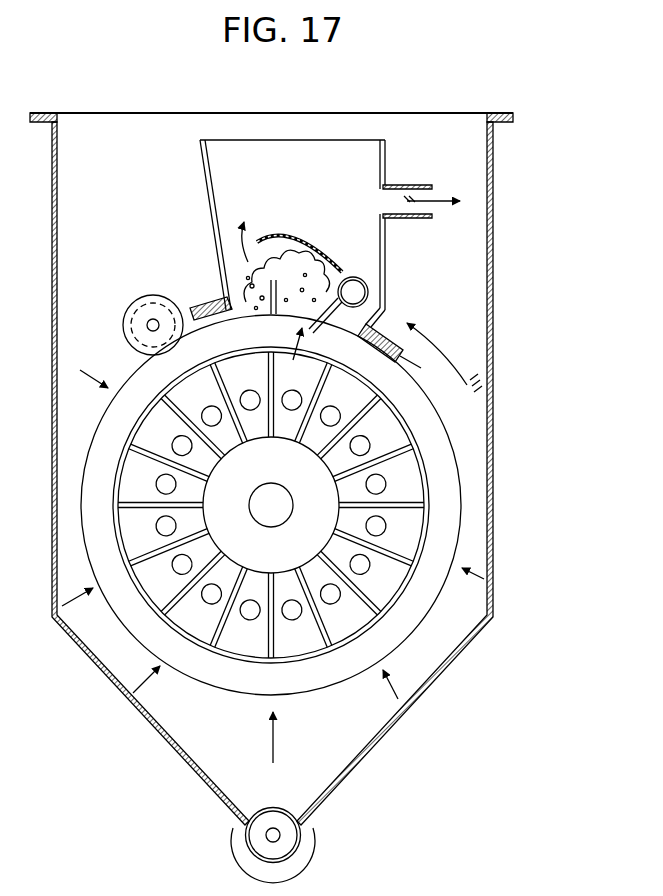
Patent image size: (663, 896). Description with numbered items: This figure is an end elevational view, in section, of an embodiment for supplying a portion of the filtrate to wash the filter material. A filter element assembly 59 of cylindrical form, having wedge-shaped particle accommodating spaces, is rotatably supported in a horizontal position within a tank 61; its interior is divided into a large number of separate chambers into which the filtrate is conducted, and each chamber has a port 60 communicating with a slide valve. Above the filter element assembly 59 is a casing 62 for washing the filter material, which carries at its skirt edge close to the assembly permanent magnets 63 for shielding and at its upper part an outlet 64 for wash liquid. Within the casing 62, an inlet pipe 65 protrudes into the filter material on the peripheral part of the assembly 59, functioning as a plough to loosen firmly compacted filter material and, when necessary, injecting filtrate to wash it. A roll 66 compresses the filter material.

The filter element assembly 59 is at (456, 500).
The port 60 is at (387, 484).
The tank 61 is at (493, 262).
The casing 62 is at (238, 142).
The permanent magnets 63 is at (380, 318).
The outlet 64 is at (408, 186).
The inlet pipe 65 is at (356, 276).
The roll 66 is at (152, 295).